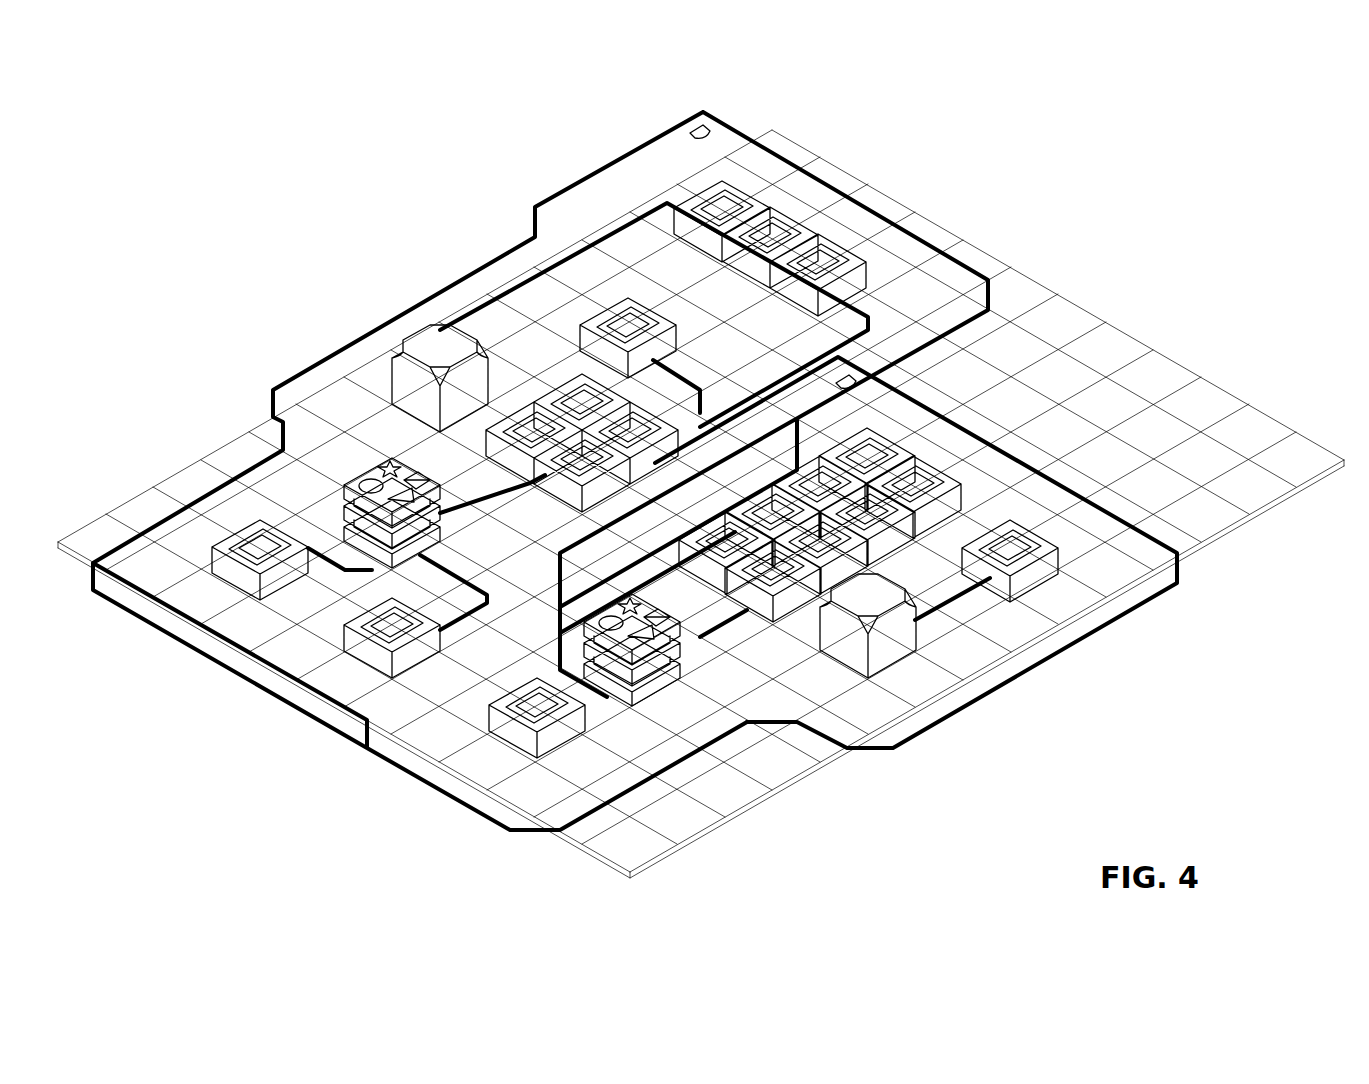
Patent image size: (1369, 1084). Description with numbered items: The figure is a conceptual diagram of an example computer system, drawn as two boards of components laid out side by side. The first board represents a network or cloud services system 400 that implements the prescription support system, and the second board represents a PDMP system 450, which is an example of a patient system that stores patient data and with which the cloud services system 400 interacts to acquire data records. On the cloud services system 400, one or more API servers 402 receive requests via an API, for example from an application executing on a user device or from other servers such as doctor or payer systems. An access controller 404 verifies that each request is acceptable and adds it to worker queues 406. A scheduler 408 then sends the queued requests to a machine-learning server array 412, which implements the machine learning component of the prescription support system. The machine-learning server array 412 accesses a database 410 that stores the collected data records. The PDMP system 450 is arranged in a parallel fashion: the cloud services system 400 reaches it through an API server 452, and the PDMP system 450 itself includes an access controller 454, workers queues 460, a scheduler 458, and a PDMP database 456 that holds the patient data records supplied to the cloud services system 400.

The network or cloud services system 400 is at (480, 263).
The API servers 402 is at (237, 549).
The access controller 404 is at (545, 485).
The worker queues 406 is at (385, 455).
The scheduler 408 is at (628, 300).
The database 410 is at (410, 340).
The machine-learning server array 412 is at (715, 195).
The PDMP system 450 is at (1003, 688).
The API server 452 is at (560, 734).
The access controller 454 is at (680, 695).
The PDMP database 456 is at (917, 640).
The scheduler 458 is at (1060, 553).
The workers queues 460 is at (1000, 465).